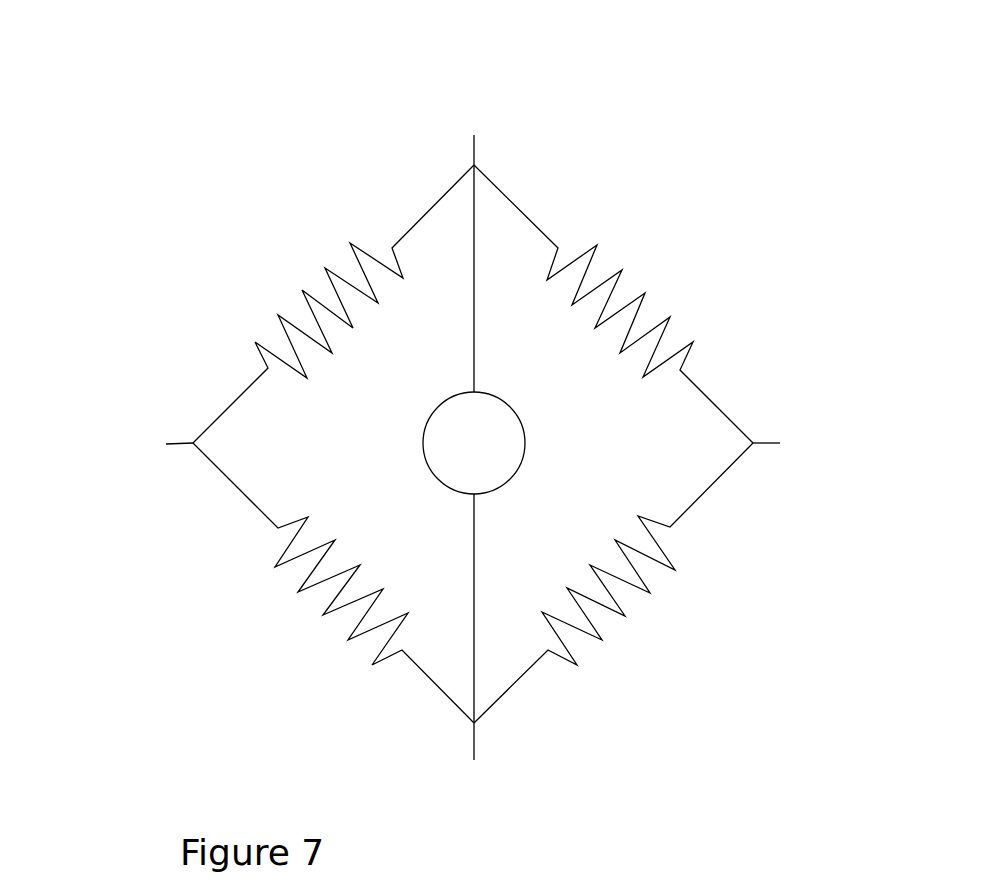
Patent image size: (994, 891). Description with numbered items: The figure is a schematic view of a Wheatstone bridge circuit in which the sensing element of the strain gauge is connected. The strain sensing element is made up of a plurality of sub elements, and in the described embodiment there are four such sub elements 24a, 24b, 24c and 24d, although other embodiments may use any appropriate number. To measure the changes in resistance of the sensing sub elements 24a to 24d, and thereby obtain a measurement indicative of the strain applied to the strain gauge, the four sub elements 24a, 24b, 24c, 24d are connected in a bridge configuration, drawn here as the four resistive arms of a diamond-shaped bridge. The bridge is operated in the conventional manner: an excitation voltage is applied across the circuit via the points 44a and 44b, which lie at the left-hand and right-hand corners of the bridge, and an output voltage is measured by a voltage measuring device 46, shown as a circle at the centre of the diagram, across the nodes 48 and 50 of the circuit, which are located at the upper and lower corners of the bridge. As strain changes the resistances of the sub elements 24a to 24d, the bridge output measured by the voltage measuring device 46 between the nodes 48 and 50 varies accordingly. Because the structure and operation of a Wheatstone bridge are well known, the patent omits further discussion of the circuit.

The sub element 24a is at (302, 288).
The sub element 24b is at (655, 287).
The sub element 24c is at (630, 620).
The sub element 24d is at (322, 617).
The point 44a is at (166, 444).
The point 44b is at (780, 443).
The voltage measuring device 46 is at (437, 400).
The node 48 is at (475, 135).
The node 50 is at (474, 760).